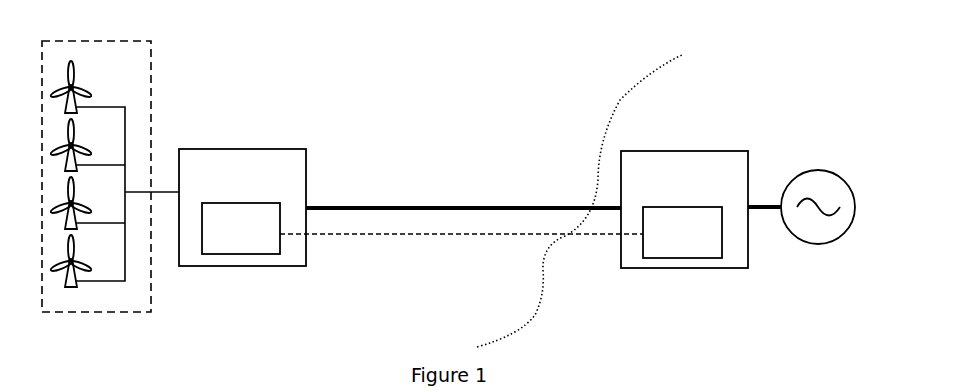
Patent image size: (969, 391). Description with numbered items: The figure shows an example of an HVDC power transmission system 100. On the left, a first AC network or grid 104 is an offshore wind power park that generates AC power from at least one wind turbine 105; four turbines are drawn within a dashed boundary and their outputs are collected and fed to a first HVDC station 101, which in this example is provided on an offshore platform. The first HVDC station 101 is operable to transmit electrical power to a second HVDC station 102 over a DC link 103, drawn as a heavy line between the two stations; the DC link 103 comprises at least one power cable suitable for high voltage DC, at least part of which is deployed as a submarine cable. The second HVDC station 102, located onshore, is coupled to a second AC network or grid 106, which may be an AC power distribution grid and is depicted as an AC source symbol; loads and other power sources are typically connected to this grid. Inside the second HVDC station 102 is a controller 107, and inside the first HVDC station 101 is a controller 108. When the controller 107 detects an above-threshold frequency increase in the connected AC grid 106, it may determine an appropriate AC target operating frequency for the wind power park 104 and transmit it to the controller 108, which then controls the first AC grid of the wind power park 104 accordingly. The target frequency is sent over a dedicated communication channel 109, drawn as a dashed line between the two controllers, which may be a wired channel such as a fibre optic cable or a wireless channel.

The HVDC power transmission system 100 is at (575, 72).
The first HVDC station 101 is at (242, 207).
The second HVDC station 102 is at (684, 209).
The DC link 103 is at (432, 202).
The first AC network or grid 104 is at (152, 63).
The wind turbine 105 is at (75, 287).
The second AC network or grid 106 is at (813, 170).
The controller of the second HVDC station 107 is at (682, 232).
The controller of the first HVDC station 108 is at (241, 228).
The dedicated communication channel 109 is at (384, 238).